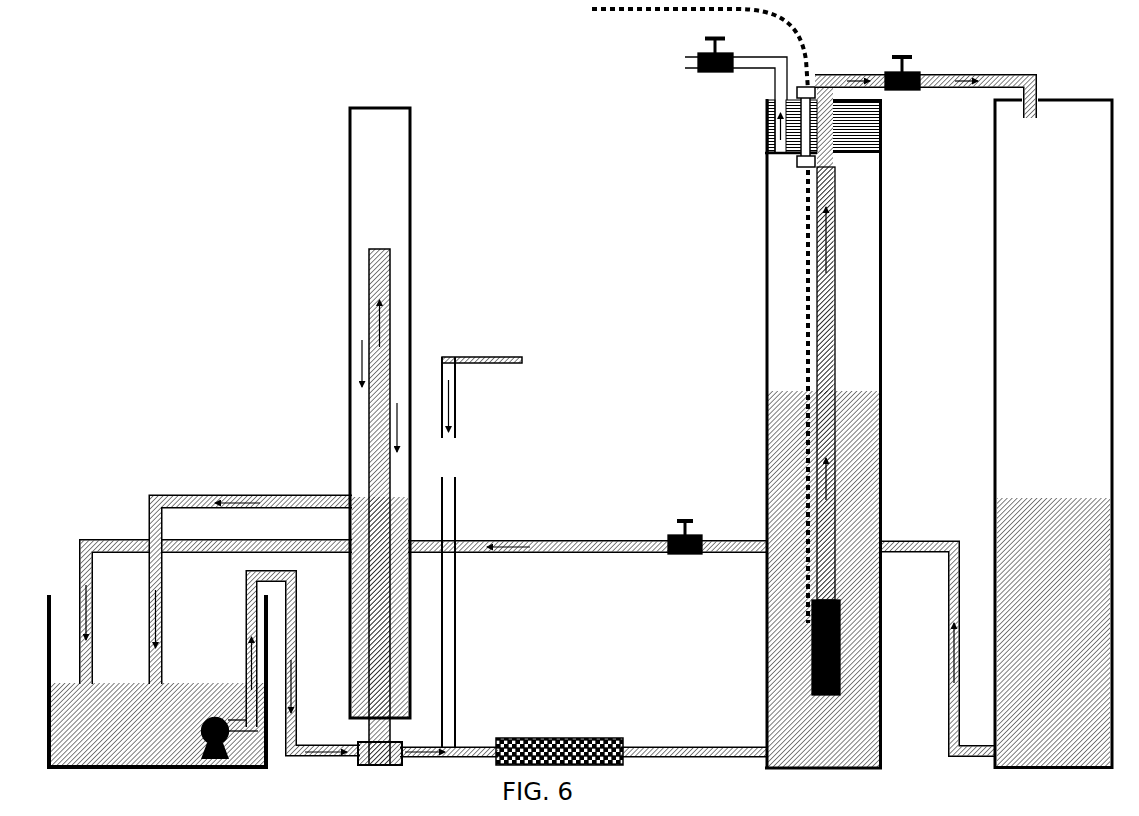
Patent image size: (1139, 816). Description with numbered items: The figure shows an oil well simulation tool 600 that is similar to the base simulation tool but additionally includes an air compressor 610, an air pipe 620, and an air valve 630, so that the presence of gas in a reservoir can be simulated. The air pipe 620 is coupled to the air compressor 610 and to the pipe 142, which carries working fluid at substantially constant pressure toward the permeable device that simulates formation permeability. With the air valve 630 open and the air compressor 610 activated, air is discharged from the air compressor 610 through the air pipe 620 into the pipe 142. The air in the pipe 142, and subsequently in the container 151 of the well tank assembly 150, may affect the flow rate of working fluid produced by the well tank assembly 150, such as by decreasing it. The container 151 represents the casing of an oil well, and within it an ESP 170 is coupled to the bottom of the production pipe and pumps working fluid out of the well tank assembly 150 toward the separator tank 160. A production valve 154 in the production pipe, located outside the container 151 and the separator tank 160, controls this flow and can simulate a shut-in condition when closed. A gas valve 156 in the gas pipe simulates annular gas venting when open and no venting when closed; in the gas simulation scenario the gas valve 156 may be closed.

The oil well simulation tool 600 is at (186, 66).
The pipe 142 is at (472, 747).
The well tank assembly 150 is at (811, 389).
The container 151 is at (759, 377).
The production valve 154 is at (920, 72).
The gas valve 156 is at (698, 73).
The separator tank 160 is at (1073, 88).
The ESP 170 is at (803, 645).
The air compressor 610 is at (520, 332).
The air pipe 620 is at (479, 357).
The air valve 630 is at (478, 452).